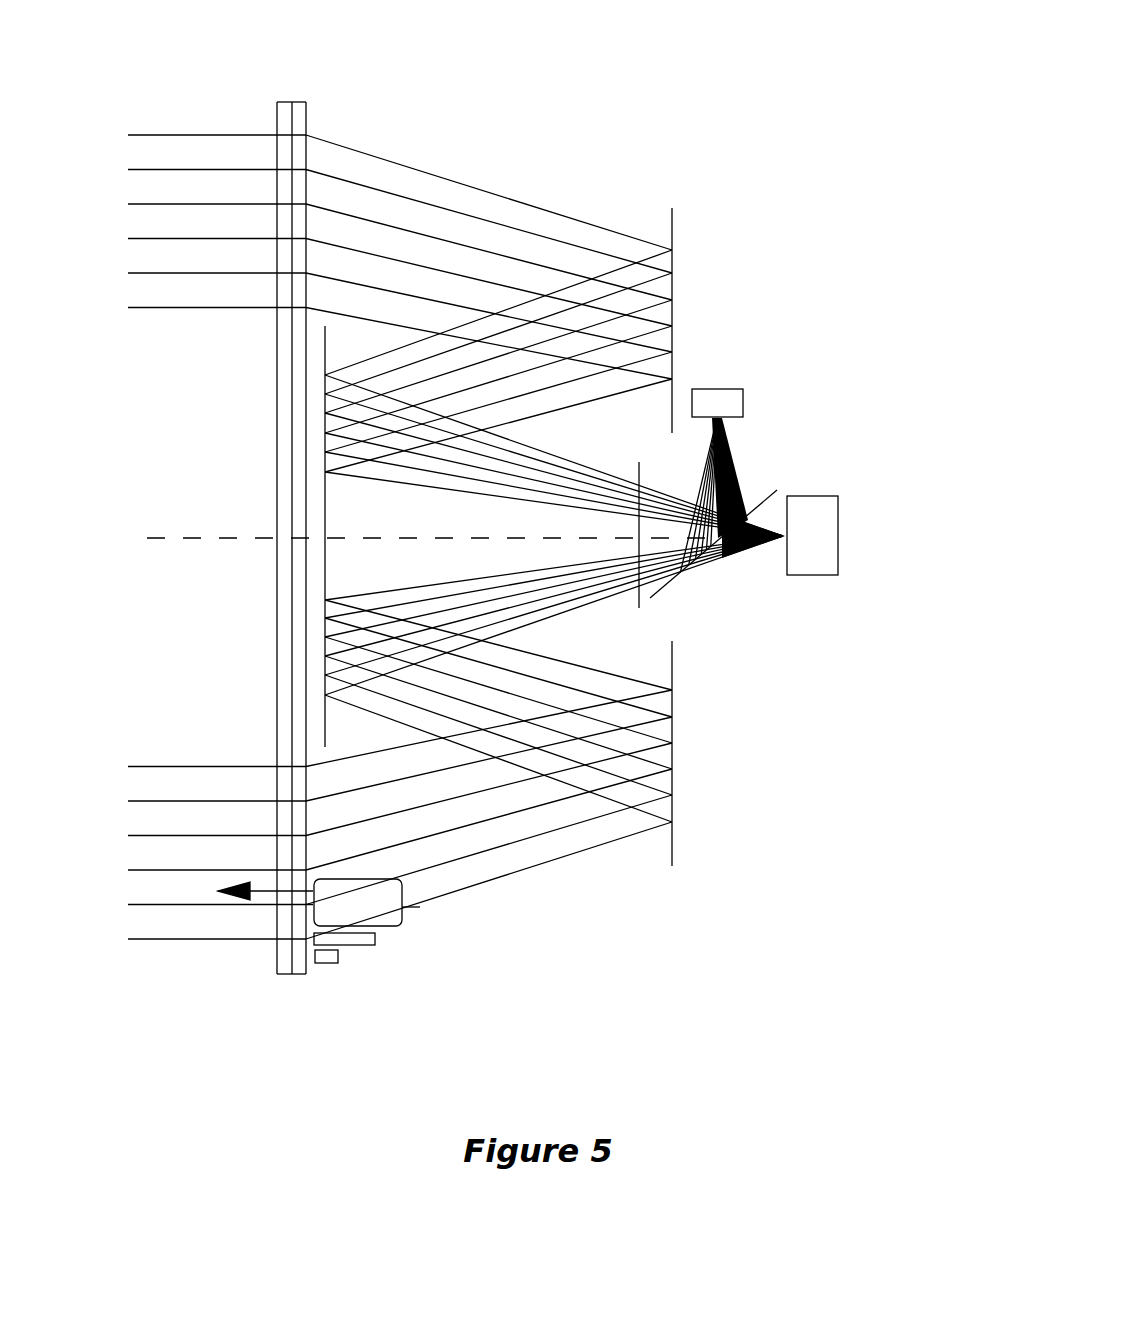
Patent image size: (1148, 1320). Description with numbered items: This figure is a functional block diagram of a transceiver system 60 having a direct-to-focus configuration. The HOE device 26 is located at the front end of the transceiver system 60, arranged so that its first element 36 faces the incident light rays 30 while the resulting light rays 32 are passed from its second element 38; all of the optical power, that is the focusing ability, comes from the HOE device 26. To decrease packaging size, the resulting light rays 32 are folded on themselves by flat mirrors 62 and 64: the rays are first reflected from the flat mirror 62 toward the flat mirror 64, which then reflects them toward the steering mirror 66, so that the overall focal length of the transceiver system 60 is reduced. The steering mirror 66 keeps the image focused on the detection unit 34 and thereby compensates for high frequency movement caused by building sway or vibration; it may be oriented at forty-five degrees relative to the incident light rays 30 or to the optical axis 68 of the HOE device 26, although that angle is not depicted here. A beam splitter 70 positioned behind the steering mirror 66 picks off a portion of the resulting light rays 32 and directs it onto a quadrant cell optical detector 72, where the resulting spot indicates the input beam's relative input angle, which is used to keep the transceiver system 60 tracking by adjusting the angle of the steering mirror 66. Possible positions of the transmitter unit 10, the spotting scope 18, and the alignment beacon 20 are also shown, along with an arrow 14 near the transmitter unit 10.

The transmitter unit 10 is at (392, 915).
The light beam 14 is at (249, 892).
The spotting scope 18 is at (367, 937).
The alignment beacon 20 is at (330, 958).
The HOE device 26 is at (315, 95).
The incident light rays 30 is at (256, 537).
The resulting light rays 32 is at (502, 187).
The detection unit 34 is at (845, 537).
The first element 36 is at (284, 975).
The second element 38 is at (299, 975).
The transceiver system 60 is at (788, 120).
The flat mirror 62 is at (677, 808).
The flat mirror 64 is at (335, 570).
The steering mirror 66 is at (648, 495).
The optical axis 68 is at (440, 539).
The beam splitter 70 is at (688, 572).
The quadrant cell optical detector 72 is at (746, 388).